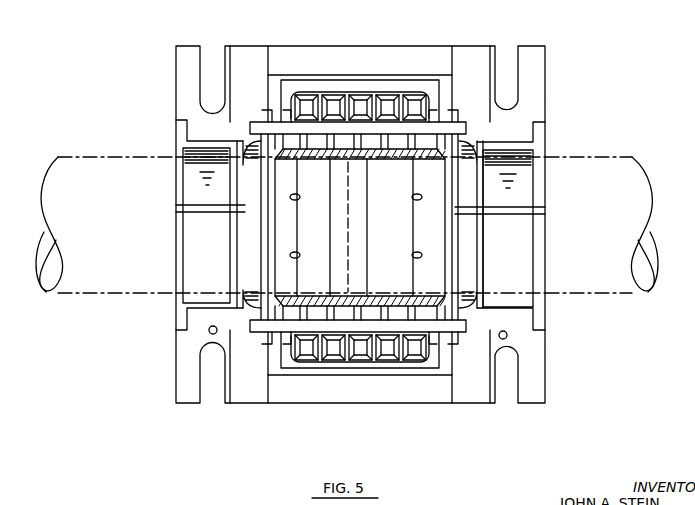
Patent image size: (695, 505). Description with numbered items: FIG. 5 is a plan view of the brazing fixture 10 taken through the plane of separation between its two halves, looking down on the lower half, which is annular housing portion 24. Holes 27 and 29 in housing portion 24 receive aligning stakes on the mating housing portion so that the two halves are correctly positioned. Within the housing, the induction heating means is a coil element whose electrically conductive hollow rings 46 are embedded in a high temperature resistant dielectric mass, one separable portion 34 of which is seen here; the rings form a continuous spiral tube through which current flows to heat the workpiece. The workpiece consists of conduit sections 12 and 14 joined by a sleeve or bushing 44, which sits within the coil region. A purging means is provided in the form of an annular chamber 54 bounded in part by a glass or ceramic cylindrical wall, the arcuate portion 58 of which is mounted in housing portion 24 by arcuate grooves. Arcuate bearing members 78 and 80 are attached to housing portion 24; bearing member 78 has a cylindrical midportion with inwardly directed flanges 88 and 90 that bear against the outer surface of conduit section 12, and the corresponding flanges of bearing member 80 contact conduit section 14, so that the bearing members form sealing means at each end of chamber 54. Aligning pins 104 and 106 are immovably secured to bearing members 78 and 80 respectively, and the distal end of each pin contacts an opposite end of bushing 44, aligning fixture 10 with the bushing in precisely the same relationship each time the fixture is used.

The brazing fixture 10 is at (441, 47).
The conduit section 12 is at (100, 155).
The conduit section 14 is at (656, 178).
The annular housing portion 24 is at (400, 404).
The hole 27 is at (509, 334).
The hole 29 is at (207, 330).
The separable portion of dielectric material 34 is at (272, 119).
The bushing 44 is at (366, 162).
The hollow ring 46 is at (309, 103).
The annular chamber 54 is at (296, 144).
The arcuate portion 58 is at (454, 126).
The arcuate bearing member 78 is at (177, 135).
The arcuate bearing member 80 is at (540, 135).
The inwardly directed flange 88 is at (181, 156).
The inwardly directed flange 90 is at (240, 150).
The aligning pin 104 is at (216, 206).
The aligning pin 106 is at (517, 210).